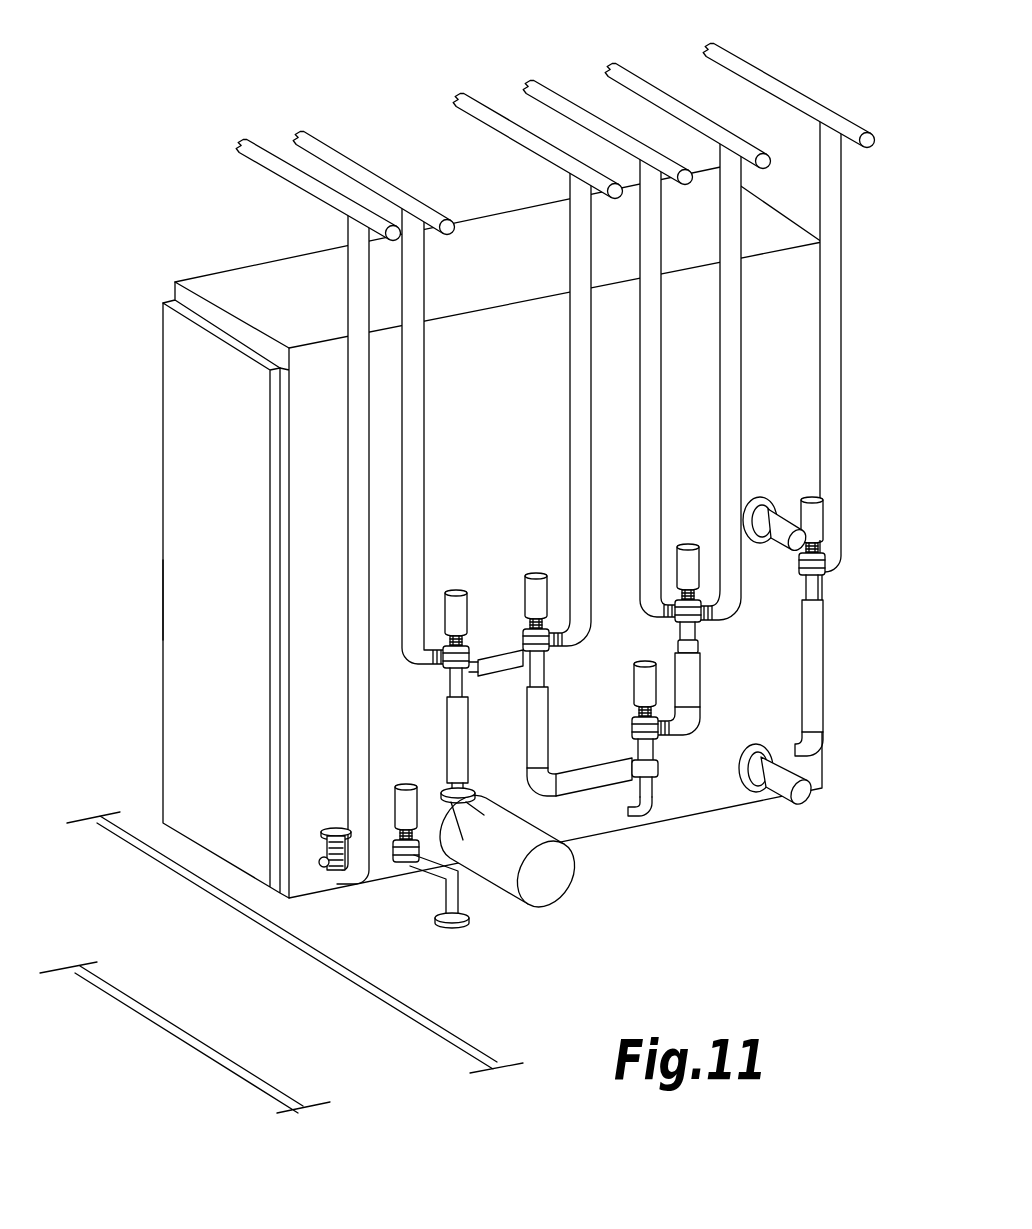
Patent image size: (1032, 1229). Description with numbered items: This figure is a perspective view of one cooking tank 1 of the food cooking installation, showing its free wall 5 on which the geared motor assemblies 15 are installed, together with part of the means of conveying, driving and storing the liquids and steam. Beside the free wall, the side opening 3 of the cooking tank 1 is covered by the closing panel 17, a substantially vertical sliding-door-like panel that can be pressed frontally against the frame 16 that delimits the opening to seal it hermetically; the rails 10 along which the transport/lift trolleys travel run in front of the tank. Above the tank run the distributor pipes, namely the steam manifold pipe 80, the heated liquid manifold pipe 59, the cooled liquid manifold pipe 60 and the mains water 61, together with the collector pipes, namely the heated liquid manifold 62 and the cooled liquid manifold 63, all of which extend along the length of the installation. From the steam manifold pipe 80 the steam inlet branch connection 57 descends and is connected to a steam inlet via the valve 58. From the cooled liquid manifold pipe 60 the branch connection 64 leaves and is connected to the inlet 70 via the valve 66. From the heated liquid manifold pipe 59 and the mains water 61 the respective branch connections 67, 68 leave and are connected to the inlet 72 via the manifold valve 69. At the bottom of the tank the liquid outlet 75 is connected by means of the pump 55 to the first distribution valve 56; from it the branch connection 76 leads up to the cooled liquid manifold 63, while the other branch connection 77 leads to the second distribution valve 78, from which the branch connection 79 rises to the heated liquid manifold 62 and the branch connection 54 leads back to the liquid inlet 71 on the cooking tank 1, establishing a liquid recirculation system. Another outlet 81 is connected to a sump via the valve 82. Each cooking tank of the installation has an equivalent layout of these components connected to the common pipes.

The cooking tank 1 is at (276, 272).
The side opening 3 is at (155, 435).
The free wall 5 is at (299, 557).
The rails 10 is at (217, 1057).
The geared motor assembly 15 is at (790, 520).
The frame 16 is at (175, 292).
The closing panel 17 is at (175, 467).
The branch connection 54 is at (543, 720).
The pump 55 is at (557, 883).
The first distribution valve 56 is at (457, 593).
The steam inlet branch connection 57 is at (355, 360).
The valve 58 is at (332, 836).
The heated liquid manifold pipe 59 is at (560, 87).
The cooled liquid manifold pipe 60 is at (790, 90).
The mains water 61 is at (640, 82).
The heated liquid manifold 62 is at (488, 107).
The cooled liquid manifold 63 is at (333, 140).
The branch connection 64 is at (838, 203).
The valve 66 is at (822, 528).
The branch connection 67 is at (655, 296).
The branch connection 68 is at (739, 418).
The manifold valve 69 is at (683, 547).
The inlet 70 is at (818, 743).
The liquid inlet 71 is at (650, 811).
The inlet 72 is at (627, 676).
The liquid outlet 75 is at (450, 727).
The branch connection 76 is at (421, 391).
The branch connection 77 is at (507, 667).
The second distribution valve 78 is at (538, 577).
The branch connection 79 is at (571, 384).
The steam manifold pipe 80 is at (266, 148).
The outlet 81 is at (440, 873).
The valve 82 is at (407, 790).